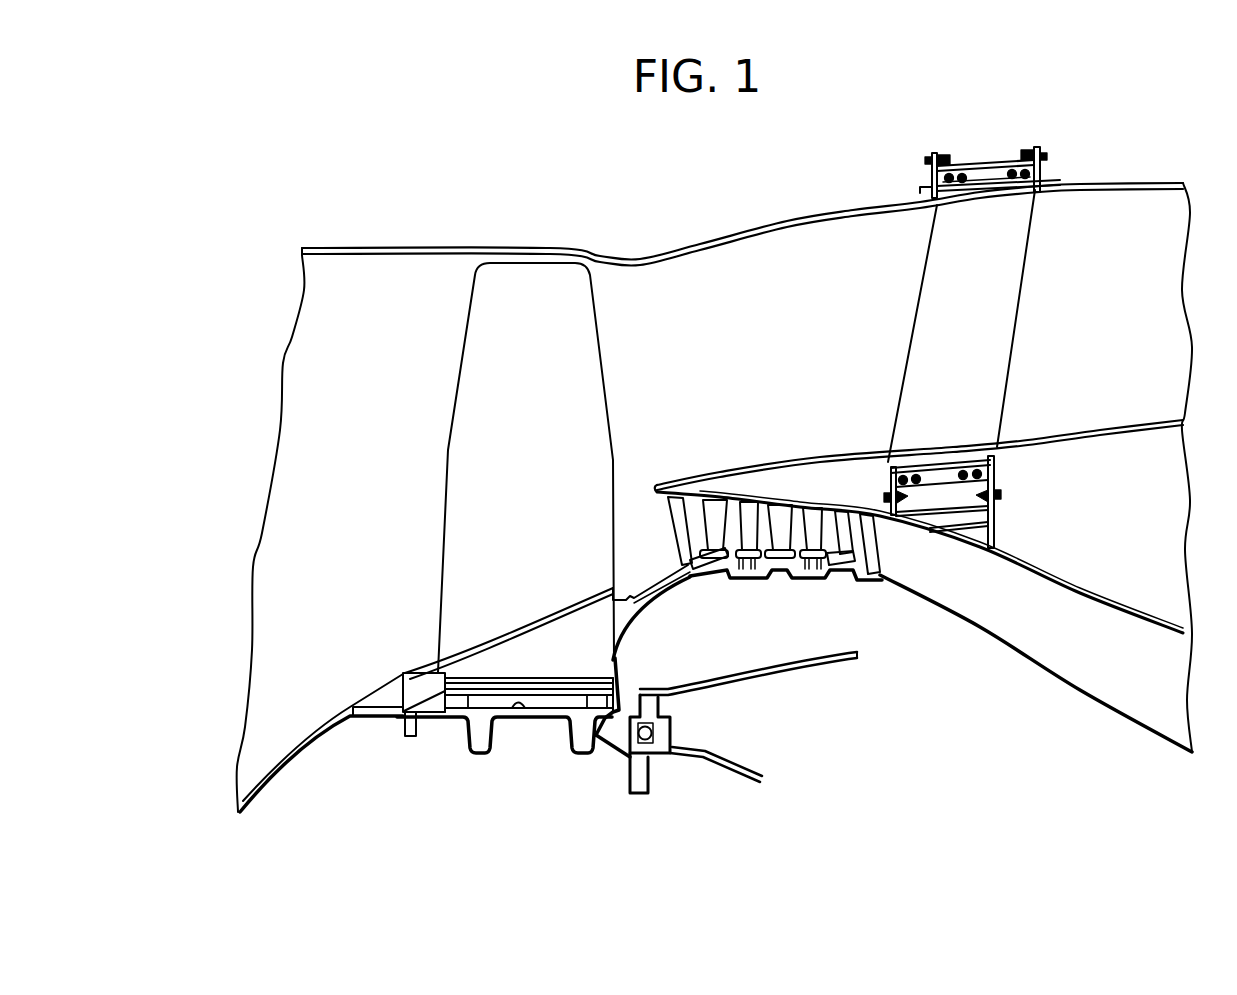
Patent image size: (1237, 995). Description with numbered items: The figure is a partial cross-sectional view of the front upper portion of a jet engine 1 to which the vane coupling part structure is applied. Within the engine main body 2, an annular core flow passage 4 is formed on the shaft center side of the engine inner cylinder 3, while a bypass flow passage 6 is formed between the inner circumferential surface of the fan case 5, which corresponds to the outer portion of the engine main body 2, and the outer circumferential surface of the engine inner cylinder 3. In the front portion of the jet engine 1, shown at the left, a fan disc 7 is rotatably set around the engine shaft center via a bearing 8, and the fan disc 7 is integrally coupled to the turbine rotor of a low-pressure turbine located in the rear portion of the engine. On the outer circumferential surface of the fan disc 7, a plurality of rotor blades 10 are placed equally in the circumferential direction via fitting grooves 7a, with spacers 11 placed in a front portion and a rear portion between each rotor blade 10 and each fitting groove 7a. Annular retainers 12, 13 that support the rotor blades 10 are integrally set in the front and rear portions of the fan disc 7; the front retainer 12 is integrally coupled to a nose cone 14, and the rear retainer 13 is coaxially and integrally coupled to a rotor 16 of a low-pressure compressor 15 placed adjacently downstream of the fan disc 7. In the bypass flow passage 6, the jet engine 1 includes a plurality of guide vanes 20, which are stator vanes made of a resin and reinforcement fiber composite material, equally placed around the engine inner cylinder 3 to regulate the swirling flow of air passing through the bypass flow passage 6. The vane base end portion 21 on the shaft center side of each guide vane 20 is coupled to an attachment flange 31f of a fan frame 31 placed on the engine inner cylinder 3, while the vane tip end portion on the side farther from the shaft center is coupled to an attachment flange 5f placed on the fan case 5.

The jet engine 1 is at (307, 207).
The engine main body 2 is at (383, 425).
The engine inner cylinder 3 is at (1093, 427).
The annular core flow passage 4 is at (985, 625).
The fan case 5 is at (790, 222).
The attachment flange 5f is at (927, 180).
The bypass flow passage 6 is at (855, 252).
The fan disc 7 is at (475, 755).
The fitting groove 7a is at (520, 708).
The bearing 8 is at (660, 732).
The rotor blade 10 is at (460, 345).
The spacer 11 is at (458, 722).
The retainer 12 is at (417, 697).
The retainer 13 is at (620, 680).
The nose cone 14 is at (298, 747).
The low-pressure compressor 15 is at (797, 510).
The rotor 16 is at (722, 582).
The guide vane 20 is at (912, 328).
The vane base end portion 21 is at (983, 470).
The fan frame 31 is at (1000, 535).
The attachment flange 31f is at (890, 497).